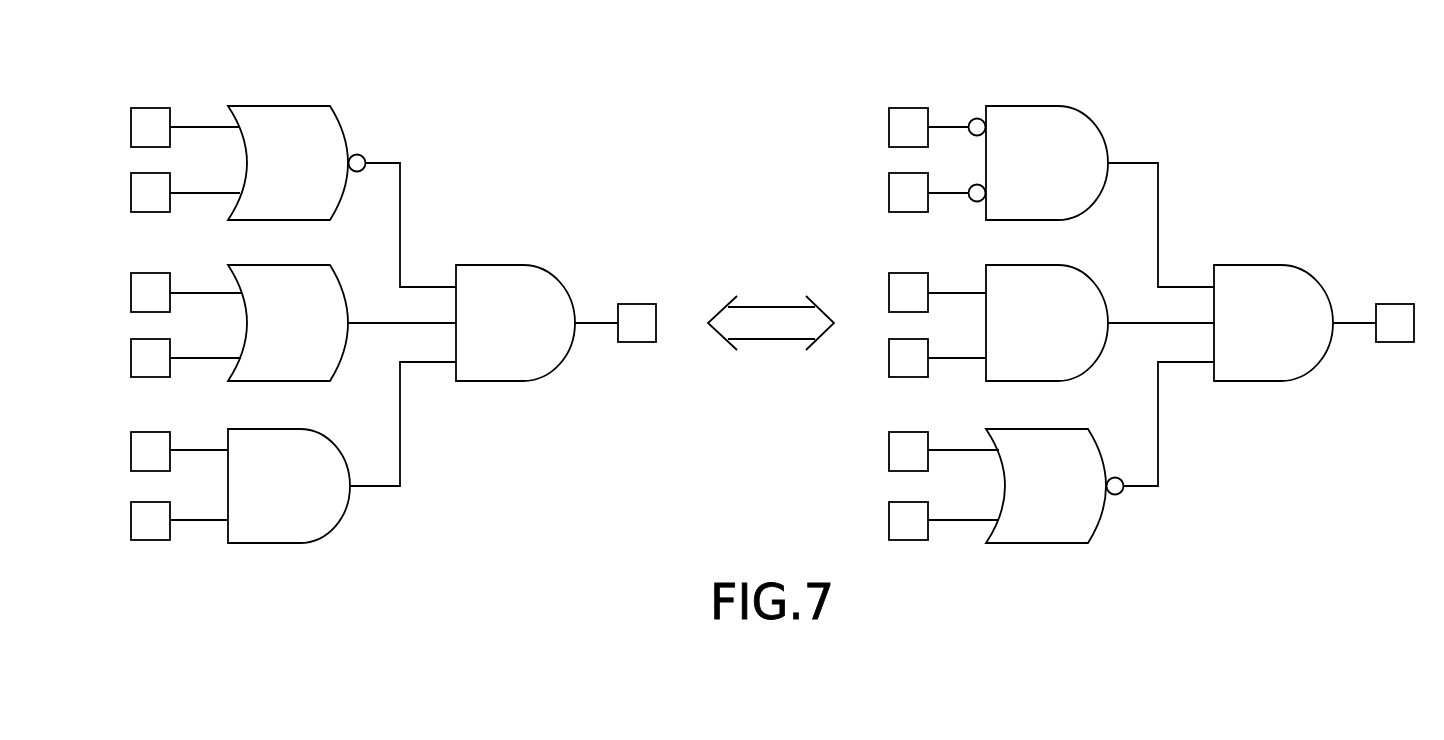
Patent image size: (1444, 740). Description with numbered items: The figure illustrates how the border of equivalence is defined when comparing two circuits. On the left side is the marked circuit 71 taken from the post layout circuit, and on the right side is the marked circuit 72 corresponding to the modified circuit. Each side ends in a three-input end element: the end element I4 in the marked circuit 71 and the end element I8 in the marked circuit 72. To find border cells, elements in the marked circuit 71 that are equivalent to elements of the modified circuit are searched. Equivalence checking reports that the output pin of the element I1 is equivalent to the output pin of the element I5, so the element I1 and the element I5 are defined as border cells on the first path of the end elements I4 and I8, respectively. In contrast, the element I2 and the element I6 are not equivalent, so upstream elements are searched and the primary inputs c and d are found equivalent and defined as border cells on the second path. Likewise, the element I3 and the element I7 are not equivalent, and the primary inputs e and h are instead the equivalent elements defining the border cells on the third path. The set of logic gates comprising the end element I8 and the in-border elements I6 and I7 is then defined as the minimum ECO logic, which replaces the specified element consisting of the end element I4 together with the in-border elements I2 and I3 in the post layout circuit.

The marked circuit 71 is at (295, 58).
The marked circuit 72 is at (1054, 58).
The element I1 is at (297, 163).
The element I2 is at (288, 323).
The element I3 is at (289, 486).
The end element I4 is at (515, 323).
The element I5 is at (1039, 163).
The element I6 is at (1047, 323).
The element I7 is at (1055, 486).
The end element I8 is at (1273, 323).